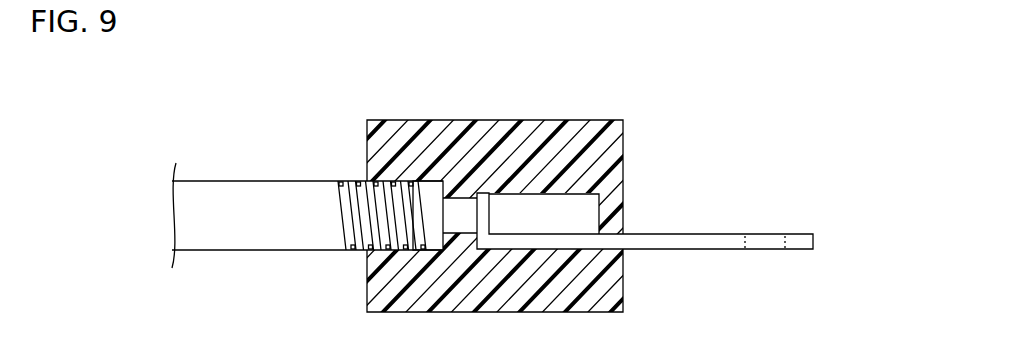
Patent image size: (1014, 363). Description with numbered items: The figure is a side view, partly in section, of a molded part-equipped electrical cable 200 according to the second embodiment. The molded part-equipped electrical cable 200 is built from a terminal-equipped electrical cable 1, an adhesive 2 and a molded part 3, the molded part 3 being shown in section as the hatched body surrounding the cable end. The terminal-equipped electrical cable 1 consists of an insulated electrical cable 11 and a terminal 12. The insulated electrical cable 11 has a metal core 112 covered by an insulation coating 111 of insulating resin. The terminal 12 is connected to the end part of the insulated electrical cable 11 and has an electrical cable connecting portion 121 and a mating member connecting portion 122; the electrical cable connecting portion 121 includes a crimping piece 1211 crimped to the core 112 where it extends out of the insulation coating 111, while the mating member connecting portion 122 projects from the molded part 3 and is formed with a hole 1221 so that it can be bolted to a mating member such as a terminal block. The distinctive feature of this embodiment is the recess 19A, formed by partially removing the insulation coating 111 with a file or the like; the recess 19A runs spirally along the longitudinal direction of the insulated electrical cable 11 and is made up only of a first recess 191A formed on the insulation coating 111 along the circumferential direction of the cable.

The molded part-equipped electrical cable 200 is at (656, 71).
The terminal-equipped electrical cable 1 is at (172, 241).
The insulated electrical cable 11 is at (214, 176).
The insulation coating 111 is at (258, 180).
The recess 19A is at (349, 180).
The first recess 191A is at (333, 189).
The adhesive 2 is at (398, 252).
The molded part 3 is at (459, 120).
The core 112 is at (556, 206).
The terminal 12 is at (811, 233).
The electrical cable connecting portion 121 is at (580, 244).
The crimping piece 1211 is at (486, 216).
The mating member connecting portion 122 is at (672, 240).
The hole 1221 is at (752, 238).